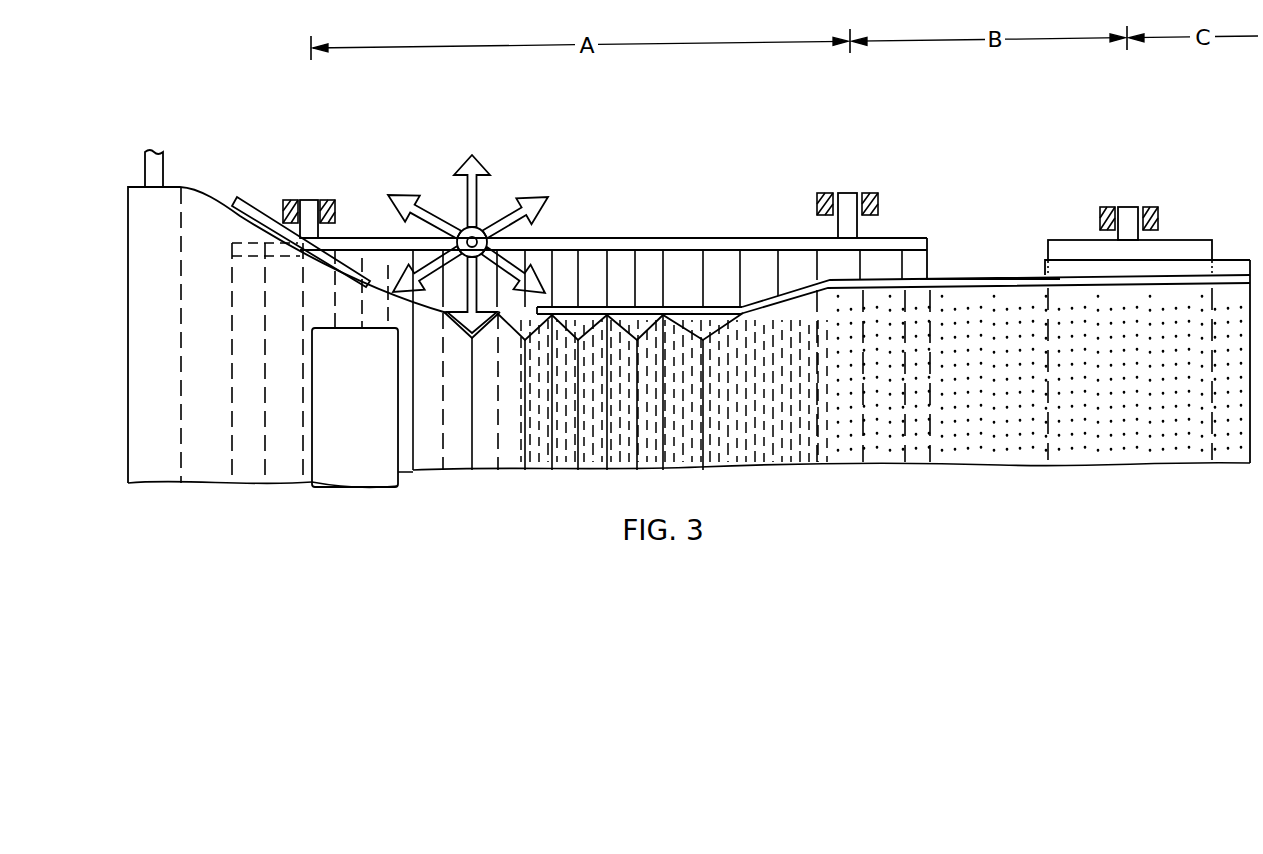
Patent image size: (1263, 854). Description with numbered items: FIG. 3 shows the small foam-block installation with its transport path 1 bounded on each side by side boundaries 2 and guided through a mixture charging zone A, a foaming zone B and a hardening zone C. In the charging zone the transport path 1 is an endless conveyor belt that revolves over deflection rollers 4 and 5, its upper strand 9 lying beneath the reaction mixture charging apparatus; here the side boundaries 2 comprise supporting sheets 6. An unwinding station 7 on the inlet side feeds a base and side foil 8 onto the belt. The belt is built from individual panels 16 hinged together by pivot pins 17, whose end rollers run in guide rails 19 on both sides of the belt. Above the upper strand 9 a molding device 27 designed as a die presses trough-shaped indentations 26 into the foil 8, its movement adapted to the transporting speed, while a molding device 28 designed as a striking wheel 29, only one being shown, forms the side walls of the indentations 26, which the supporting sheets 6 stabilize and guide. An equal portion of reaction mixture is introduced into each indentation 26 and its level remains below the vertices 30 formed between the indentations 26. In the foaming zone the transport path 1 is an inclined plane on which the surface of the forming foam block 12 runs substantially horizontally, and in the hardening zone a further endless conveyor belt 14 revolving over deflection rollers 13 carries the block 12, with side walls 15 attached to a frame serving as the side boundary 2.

The transport path 1 is at (720, 232).
The side boundaries 2 is at (260, 201).
The deflection roller 4 is at (310, 199).
The deflection roller 5 is at (845, 194).
The supporting sheets 6 is at (237, 196).
The unwinding station 7 is at (153, 476).
The base and side foil 8 is at (195, 207).
The upper strand 9 is at (594, 249).
The foam block 12 is at (1152, 447).
The deflection rollers 13 is at (1073, 247).
The endless conveyor belt 14 is at (1182, 268).
The side walls 15 is at (992, 282).
The panels 16 is at (788, 263).
The pivot pins 17 is at (700, 248).
The guide rails 19 is at (887, 237).
The trough-shaped indentations 26 is at (545, 453).
The molding device 27 is at (330, 475).
The molding device designed as striking wheel 28 is at (568, 306).
The rotary distributor 29 is at (465, 190).
The vertices 30 is at (582, 445).